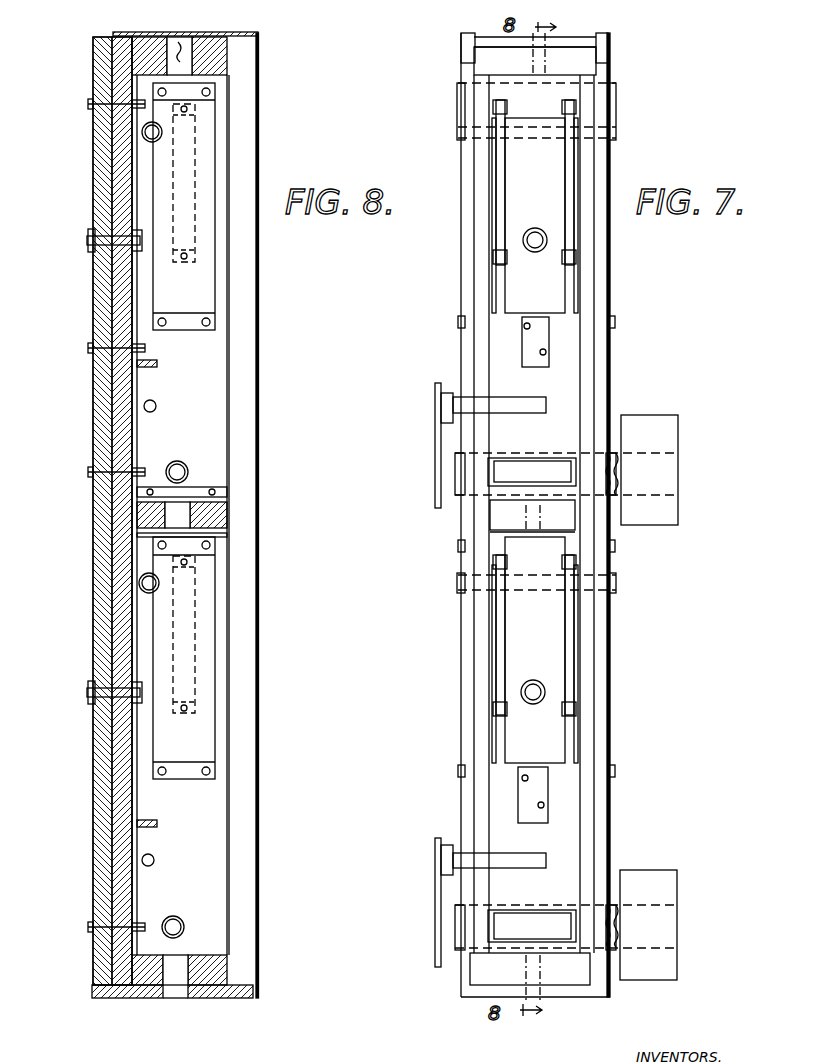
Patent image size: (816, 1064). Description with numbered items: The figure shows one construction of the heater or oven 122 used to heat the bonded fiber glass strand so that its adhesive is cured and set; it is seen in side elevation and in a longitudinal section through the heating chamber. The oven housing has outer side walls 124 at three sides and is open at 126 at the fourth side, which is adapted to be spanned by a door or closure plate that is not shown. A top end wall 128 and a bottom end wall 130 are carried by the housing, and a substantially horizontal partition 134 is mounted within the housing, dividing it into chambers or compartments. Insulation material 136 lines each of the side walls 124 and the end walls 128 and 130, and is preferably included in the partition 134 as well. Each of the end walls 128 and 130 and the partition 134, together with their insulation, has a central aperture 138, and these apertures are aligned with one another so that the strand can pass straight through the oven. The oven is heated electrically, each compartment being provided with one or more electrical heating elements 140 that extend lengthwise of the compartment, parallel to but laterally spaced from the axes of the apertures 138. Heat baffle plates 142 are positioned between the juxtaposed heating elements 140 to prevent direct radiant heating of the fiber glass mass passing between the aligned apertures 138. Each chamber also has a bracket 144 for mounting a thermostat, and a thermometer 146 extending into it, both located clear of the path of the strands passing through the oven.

In FIG. 8, the oven 122 is at (87, 409).
In FIG. 7, the oven 122 is at (617, 360).
In FIG. 8, the outer side walls 124 is at (92, 292).
In FIG. 8, the open side 126 is at (247, 132).
In FIG. 8, the top end wall 128 is at (250, 42).
In FIG. 7, the top end wall 128 is at (585, 45).
In FIG. 8, the bottom end wall 130 is at (238, 997).
In FIG. 8, the partition 134 is at (210, 516).
In FIG. 7, the partition 134 is at (500, 515).
In FIG. 8, the insulation material 136 is at (226, 65).
In FIG. 7, the insulation material 136 is at (585, 68).
In FIG. 8, the central aperture 138 is at (181, 36).
In FIG. 8, the electrical heating elements 140 is at (188, 163).
In FIG. 7, the electrical heating elements 140 is at (499, 170).
In FIG. 8, the heat baffle plates 142 is at (203, 225).
In FIG. 7, the heat baffle plates 142 is at (568, 198).
In FIG. 8, the bracket 144 is at (150, 368).
In FIG. 7, the bracket 144 is at (538, 360).
In FIG. 8, the thermometer 146 is at (156, 406).
In FIG. 7, the thermometer 146 is at (526, 412).